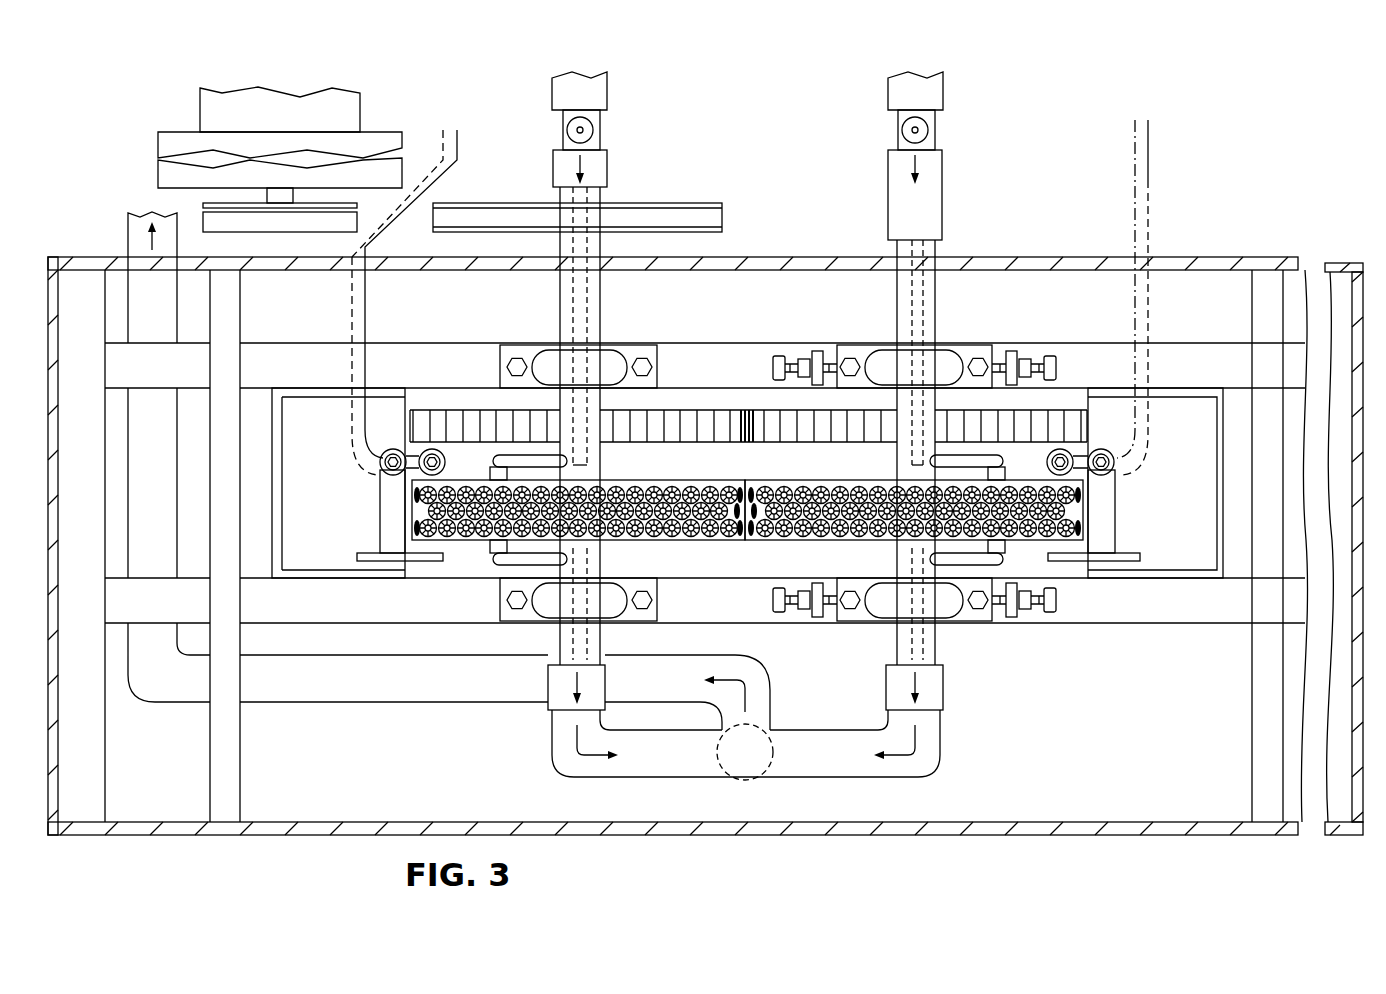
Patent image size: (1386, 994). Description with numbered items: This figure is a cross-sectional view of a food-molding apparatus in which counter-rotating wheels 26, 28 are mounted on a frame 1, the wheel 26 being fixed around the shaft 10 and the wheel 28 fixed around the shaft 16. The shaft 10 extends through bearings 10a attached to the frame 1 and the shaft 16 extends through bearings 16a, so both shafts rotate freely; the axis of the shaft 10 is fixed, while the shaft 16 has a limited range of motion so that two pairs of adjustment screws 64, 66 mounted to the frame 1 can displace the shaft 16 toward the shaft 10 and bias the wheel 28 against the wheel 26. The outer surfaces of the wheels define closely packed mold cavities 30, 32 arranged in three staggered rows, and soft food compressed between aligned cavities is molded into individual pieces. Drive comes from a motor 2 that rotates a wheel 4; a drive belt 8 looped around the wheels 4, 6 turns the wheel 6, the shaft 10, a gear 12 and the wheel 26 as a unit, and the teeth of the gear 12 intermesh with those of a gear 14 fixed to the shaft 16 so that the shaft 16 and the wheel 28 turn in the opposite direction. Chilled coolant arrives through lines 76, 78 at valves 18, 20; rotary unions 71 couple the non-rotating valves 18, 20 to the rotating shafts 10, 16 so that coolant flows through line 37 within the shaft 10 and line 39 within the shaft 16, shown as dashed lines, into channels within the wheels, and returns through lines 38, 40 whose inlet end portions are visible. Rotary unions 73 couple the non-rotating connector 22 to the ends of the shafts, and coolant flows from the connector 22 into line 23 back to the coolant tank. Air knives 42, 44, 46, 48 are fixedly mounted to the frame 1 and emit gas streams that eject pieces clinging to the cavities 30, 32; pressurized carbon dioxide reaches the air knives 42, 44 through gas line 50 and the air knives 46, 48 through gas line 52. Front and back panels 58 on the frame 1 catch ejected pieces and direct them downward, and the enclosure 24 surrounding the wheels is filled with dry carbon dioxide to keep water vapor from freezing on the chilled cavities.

The frame 1 is at (283, 356).
The motor 2 is at (200, 115).
The wheel 4 is at (203, 207).
The wheel 6 is at (722, 203).
The drive belt 8 is at (420, 215).
The shaft 10 is at (600, 313).
The bearings 10a is at (550, 355).
The gear 12 is at (645, 440).
The gear 14 is at (807, 440).
The shaft 16 is at (937, 295).
The bearings 16a is at (878, 355).
The valve 18 is at (600, 132).
The valve 20 is at (935, 132).
The connector 22 is at (890, 770).
The line 23 is at (367, 693).
The enclosure 24 is at (70, 262).
The wheel 26 is at (677, 543).
The wheel 28 is at (820, 543).
The mold cavities 30 is at (645, 487).
The mold cavities 32 is at (803, 485).
The line 37 is at (583, 243).
The line 38 is at (497, 557).
The line 39 is at (910, 293).
The line 40 is at (915, 552).
The air knife 42 is at (388, 520).
The air knife 44 is at (428, 553).
The air knife 46 is at (1107, 508).
The air knife 48 is at (1058, 553).
The gas line 50 is at (355, 310).
The gas line 52 is at (1148, 427).
The front and back panels 58 is at (282, 463).
The adjustment screws 64 is at (1055, 355).
The adjustment screws 66 is at (777, 358).
The rotary union 71 is at (557, 163).
The rotary union 73 is at (557, 703).
The line 76 is at (595, 93).
The line 78 is at (943, 93).